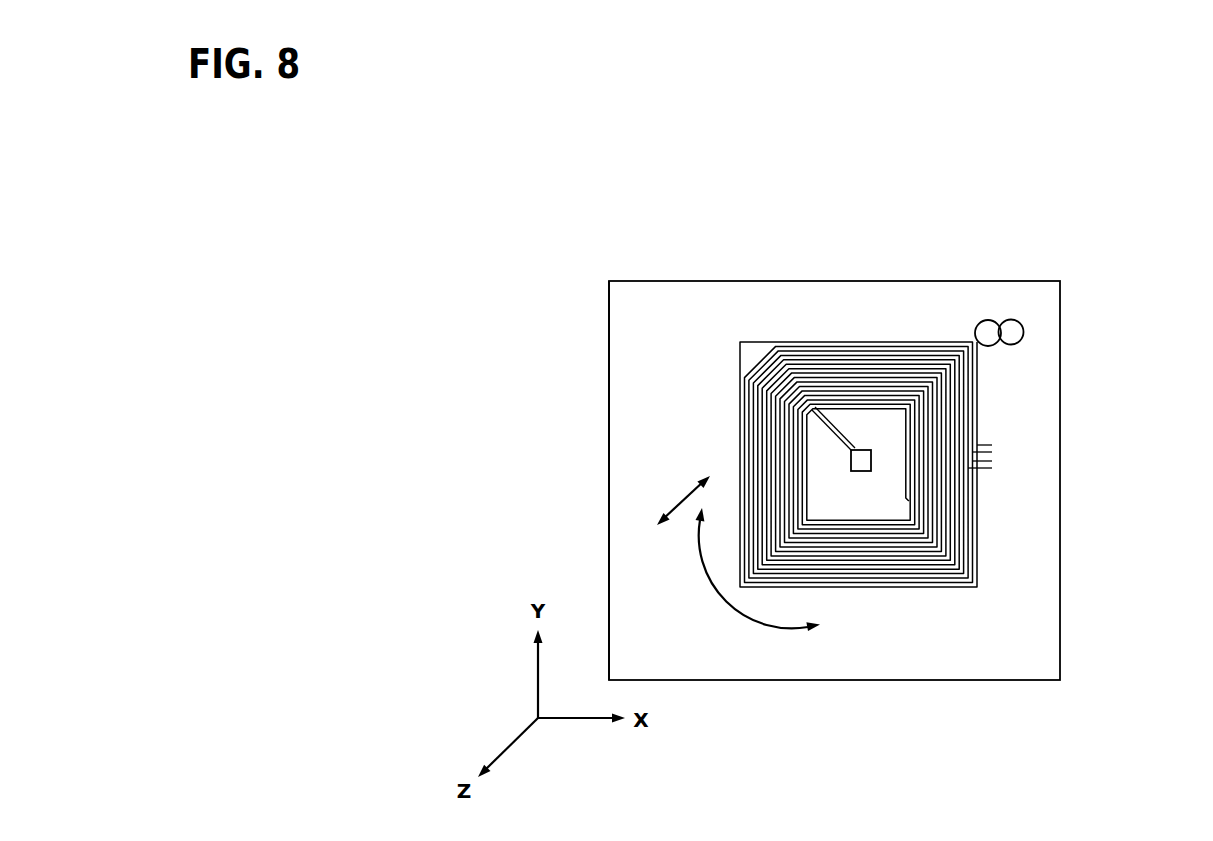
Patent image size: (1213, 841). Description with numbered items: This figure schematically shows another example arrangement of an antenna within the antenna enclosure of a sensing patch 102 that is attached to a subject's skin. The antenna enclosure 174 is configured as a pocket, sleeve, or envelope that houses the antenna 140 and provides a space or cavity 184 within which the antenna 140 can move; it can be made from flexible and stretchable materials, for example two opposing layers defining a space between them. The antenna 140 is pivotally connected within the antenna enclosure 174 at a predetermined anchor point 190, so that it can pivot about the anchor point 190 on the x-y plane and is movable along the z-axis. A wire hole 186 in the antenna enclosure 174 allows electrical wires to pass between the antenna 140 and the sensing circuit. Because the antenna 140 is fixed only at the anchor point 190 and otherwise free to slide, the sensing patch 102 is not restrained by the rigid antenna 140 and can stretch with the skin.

The sensing patch 102 is at (542, 222).
The antenna 140 is at (777, 360).
The antenna enclosure 174 is at (609, 373).
The space or cavity 184 is at (1030, 520).
The wire hole 186 is at (1024, 330).
The anchor point 190 is at (972, 340).